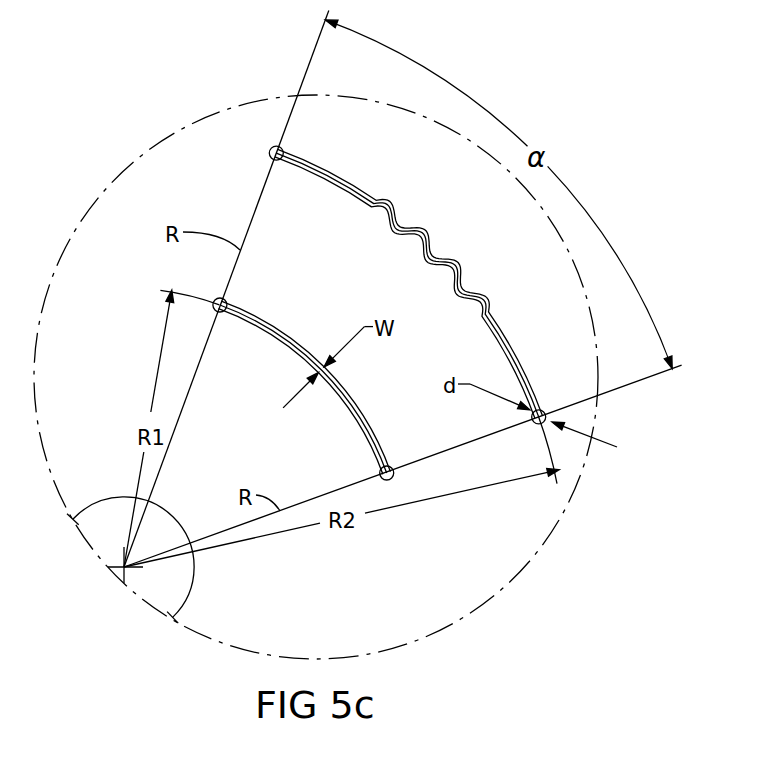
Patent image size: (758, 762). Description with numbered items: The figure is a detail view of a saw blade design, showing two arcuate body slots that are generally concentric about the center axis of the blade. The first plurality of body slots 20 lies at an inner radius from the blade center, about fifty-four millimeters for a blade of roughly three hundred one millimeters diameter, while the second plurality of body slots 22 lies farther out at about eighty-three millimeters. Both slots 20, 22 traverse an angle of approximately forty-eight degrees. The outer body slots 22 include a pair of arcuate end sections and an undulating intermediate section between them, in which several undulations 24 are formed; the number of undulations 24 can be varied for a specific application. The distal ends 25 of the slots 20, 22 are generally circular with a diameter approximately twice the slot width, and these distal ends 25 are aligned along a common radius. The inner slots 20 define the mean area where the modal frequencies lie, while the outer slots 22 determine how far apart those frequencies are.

The first plurality of body slots 20 is at (315, 327).
The second plurality of body slots 22 is at (353, 212).
The undulations 24 is at (400, 200).
The distal ends 25 is at (272, 152).